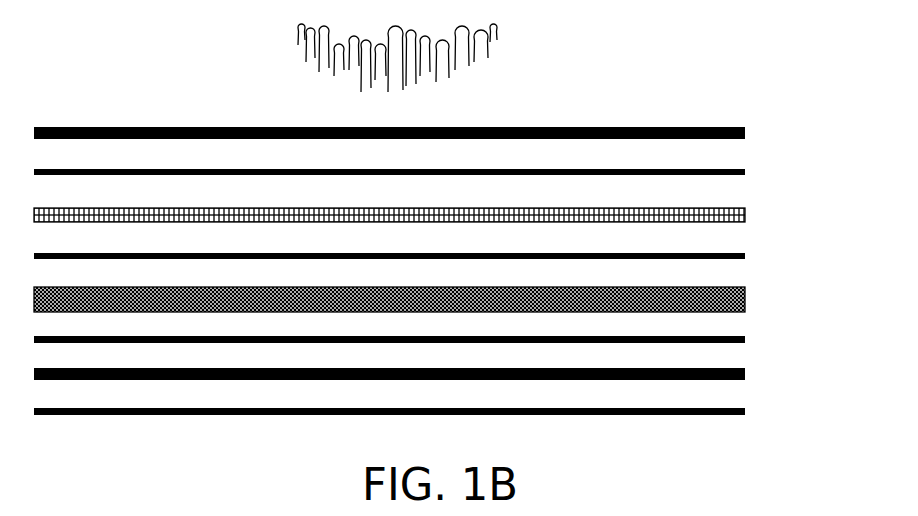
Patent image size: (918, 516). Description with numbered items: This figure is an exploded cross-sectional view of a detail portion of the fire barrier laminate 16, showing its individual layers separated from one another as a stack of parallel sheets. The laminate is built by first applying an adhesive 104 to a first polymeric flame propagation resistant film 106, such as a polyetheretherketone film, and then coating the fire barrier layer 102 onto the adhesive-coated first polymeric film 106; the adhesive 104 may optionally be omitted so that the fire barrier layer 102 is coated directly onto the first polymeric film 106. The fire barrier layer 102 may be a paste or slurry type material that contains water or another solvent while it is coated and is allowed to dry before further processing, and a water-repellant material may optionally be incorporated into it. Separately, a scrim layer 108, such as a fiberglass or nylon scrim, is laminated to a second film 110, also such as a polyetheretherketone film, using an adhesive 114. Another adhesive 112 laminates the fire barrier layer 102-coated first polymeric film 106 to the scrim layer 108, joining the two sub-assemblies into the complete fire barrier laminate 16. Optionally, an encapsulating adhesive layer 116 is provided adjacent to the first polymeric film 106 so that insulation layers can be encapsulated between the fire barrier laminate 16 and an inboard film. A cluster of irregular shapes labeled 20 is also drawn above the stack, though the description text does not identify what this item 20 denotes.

The fire barrier laminate 16 is at (665, 98).
The cell culture / biological material 20 is at (506, 34).
The fire barrier layer 102 is at (772, 299).
The adhesive 104 is at (772, 340).
The first polymeric flame propagation resistant film 106 is at (772, 374).
The scrim layer 108 is at (772, 215).
The second film 110 is at (772, 133).
The adhesive 112 is at (772, 256).
The adhesive 114 is at (772, 172).
The encapsulating adhesive layer 116 is at (772, 412).